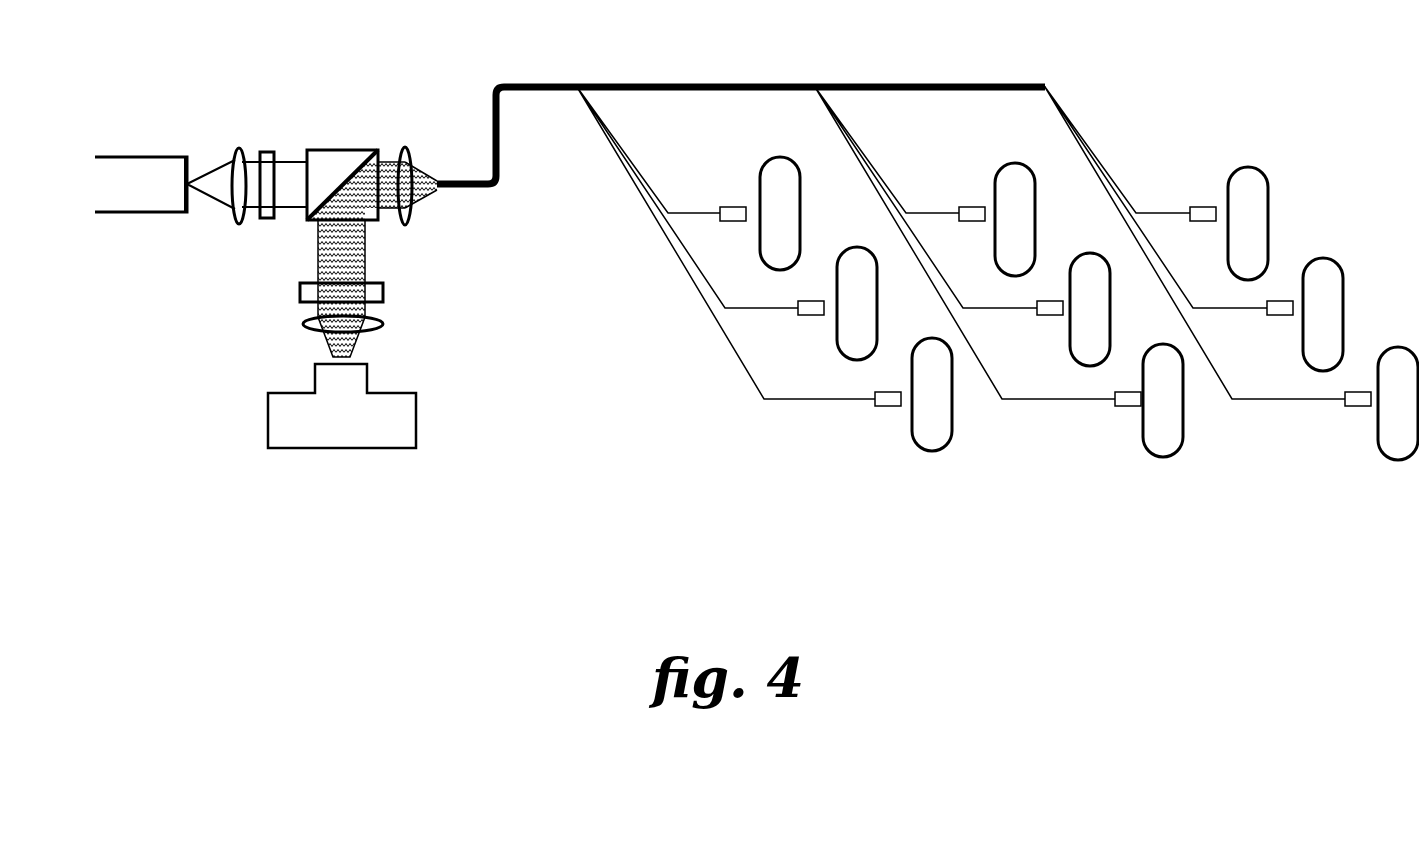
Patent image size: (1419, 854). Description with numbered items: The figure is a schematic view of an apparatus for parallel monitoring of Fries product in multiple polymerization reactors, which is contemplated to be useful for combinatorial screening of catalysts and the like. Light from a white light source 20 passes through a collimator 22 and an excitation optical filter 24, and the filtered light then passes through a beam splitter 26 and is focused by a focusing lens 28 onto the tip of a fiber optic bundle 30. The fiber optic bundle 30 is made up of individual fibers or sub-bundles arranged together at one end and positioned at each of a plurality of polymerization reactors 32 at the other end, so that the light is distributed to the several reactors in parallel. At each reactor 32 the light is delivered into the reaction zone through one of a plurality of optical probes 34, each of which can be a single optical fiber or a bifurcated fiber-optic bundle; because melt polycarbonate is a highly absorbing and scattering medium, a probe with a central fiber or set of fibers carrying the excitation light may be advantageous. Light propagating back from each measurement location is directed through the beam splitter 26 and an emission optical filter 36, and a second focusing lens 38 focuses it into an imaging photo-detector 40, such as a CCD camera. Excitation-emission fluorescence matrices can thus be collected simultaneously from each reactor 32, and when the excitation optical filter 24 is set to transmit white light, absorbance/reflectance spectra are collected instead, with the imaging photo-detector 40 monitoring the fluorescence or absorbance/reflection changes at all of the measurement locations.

The white light source 20 is at (114, 213).
The collimator 22 is at (238, 148).
The excitation optical filter 24 is at (262, 151).
The beam splitter 26 is at (305, 222).
The focusing lens 28 is at (405, 147).
The fiber optic bundle 30 is at (499, 81).
The polymerization reactors 32 is at (918, 452).
The optical probes 34 is at (888, 407).
The emission optical filter 36 is at (384, 292).
The second focusing lens 38 is at (385, 324).
The imaging photo-detector 40 is at (417, 430).